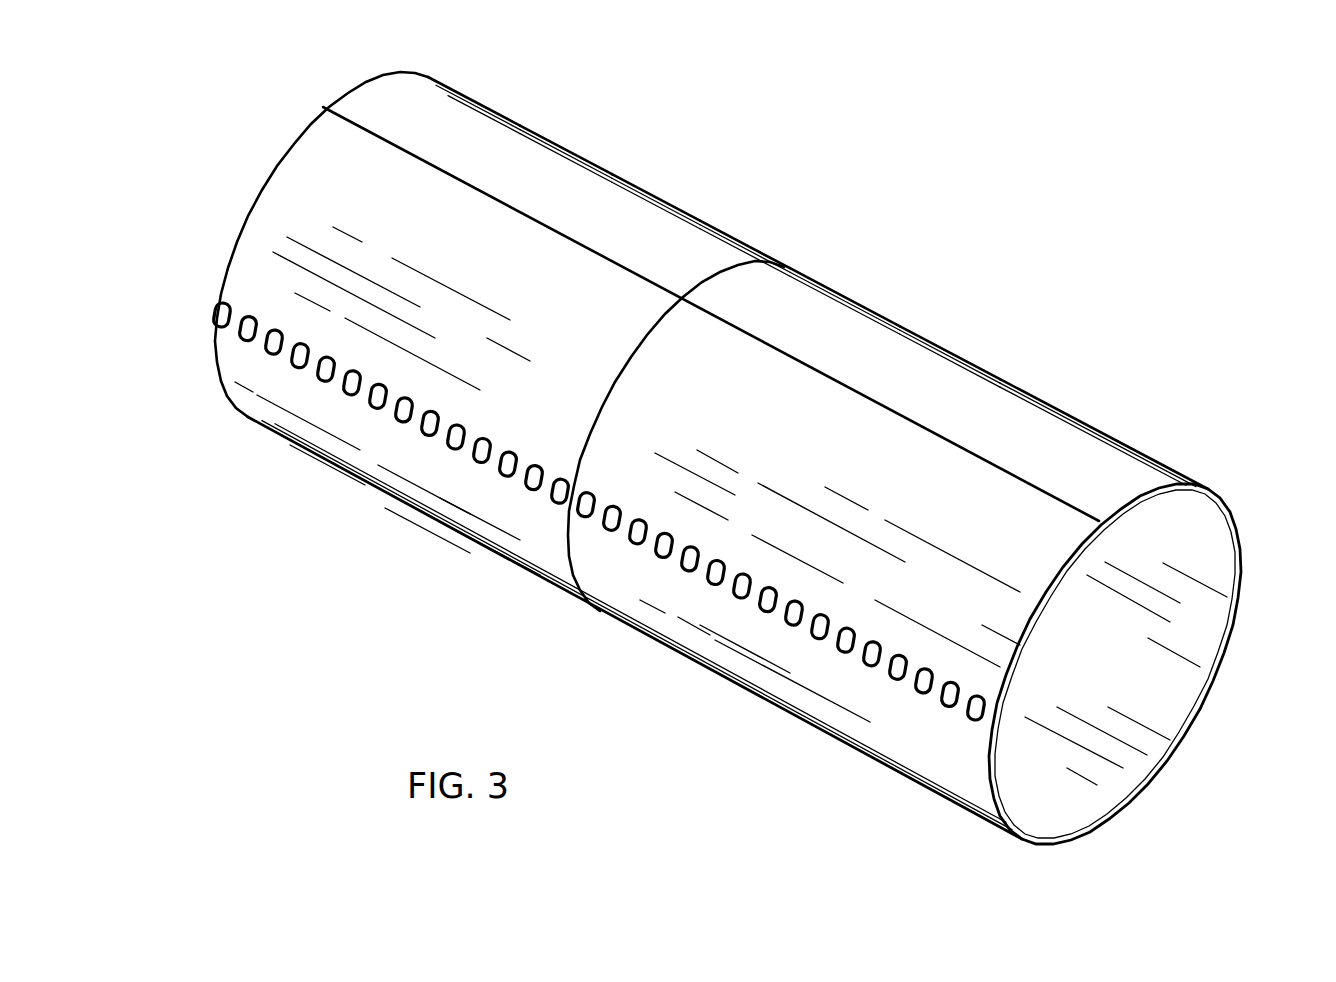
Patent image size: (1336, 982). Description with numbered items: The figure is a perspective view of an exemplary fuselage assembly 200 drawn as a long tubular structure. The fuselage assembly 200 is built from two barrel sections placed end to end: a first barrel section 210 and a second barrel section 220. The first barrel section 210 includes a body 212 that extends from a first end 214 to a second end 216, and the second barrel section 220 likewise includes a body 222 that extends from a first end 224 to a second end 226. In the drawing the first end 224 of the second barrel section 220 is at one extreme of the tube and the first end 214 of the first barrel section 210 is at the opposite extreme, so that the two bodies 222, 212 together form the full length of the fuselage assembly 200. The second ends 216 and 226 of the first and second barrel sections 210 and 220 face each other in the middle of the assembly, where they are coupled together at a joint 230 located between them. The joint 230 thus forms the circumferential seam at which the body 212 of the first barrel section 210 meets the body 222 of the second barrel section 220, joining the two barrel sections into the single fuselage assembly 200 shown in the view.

The fuselage assembly 200 is at (748, 441).
The first barrel section 210 is at (965, 347).
The body 212 is at (1043, 430).
The first end 214 is at (1197, 470).
The second end 216 is at (822, 275).
The second barrel section 220 is at (612, 162).
The body 222 is at (521, 133).
The first end 224 is at (444, 74).
The second end 226 is at (756, 235).
The joint 230 is at (728, 258).